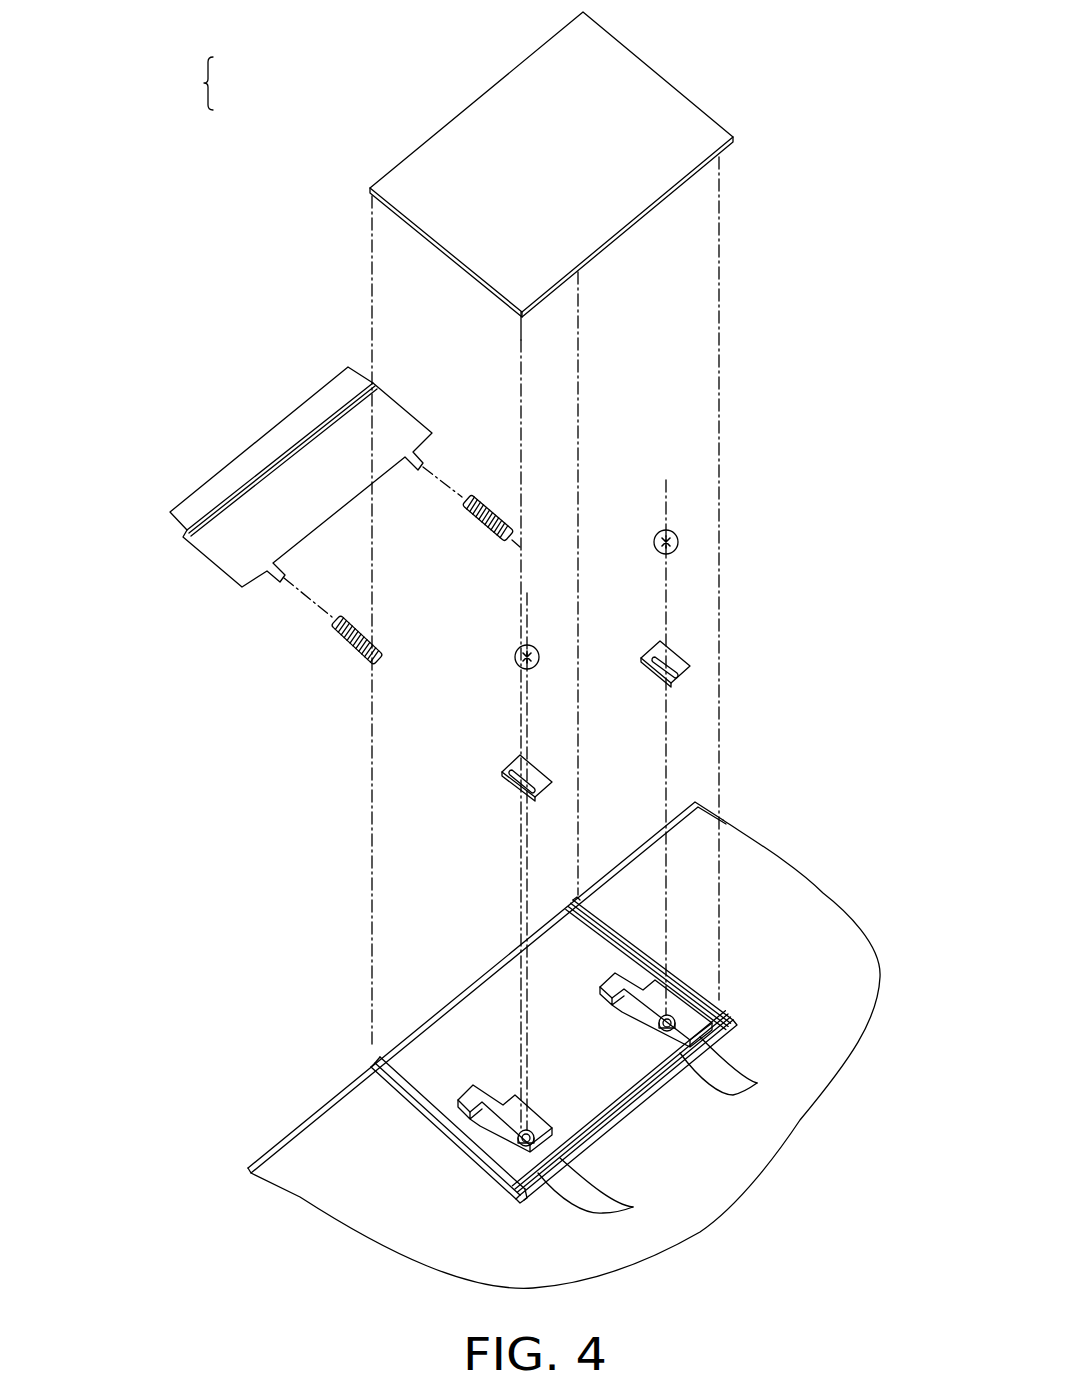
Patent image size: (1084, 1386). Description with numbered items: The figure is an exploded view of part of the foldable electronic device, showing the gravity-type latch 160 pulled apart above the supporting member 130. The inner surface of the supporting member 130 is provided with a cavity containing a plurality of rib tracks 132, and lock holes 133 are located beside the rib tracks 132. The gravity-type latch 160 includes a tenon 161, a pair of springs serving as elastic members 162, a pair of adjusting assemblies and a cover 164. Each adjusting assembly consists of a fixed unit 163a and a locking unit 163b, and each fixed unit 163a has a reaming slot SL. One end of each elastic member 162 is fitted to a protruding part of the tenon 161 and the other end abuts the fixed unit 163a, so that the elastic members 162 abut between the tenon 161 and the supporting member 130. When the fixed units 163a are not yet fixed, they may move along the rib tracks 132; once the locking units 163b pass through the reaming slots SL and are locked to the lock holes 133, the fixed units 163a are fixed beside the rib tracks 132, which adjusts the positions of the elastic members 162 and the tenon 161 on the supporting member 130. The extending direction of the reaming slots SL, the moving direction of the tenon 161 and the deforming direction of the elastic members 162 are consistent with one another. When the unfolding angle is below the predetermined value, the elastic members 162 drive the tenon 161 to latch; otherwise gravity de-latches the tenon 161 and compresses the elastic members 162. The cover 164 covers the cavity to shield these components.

The supporting member 130 is at (825, 907).
The rib tracks 132 is at (666, 1129).
The lock holes 133 is at (657, 1021).
The gravity-type latch 160 is at (160, 138).
The tenon 161 is at (241, 463).
The elastic member 162 is at (482, 523).
The fixed unit 163a is at (626, 735).
The locking unit 163b is at (514, 652).
The cover 164 is at (688, 130).
The reaming slot SL is at (522, 772).